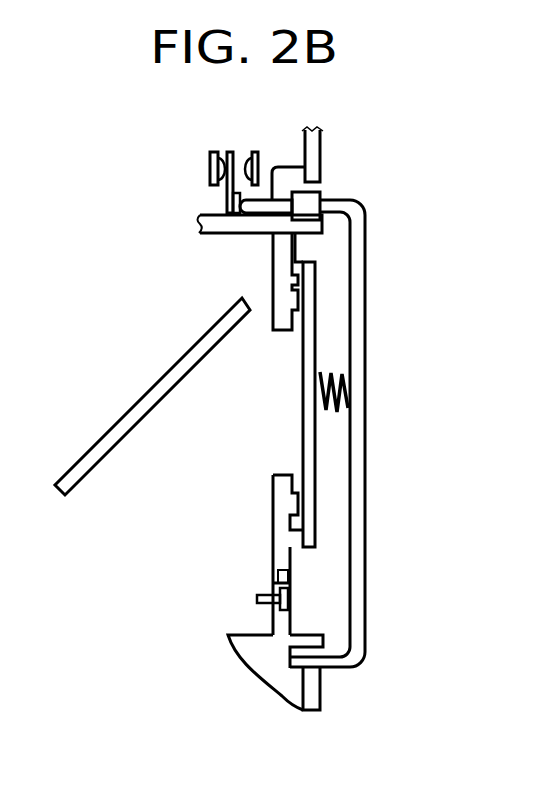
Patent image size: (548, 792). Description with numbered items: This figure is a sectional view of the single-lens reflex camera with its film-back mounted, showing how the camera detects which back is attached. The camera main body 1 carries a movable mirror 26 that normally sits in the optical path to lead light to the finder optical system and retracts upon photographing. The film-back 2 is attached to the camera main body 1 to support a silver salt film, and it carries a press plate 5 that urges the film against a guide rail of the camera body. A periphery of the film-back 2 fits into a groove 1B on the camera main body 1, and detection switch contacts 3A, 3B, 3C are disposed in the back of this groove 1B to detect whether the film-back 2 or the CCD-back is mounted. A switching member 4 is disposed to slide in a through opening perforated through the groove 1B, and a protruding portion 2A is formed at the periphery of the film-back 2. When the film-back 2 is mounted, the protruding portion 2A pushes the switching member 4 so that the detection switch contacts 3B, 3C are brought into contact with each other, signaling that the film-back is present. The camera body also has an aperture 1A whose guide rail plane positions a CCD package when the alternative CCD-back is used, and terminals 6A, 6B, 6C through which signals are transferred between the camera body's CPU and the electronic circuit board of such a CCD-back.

The camera main body 1 is at (323, 137).
The aperture 1A is at (275, 493).
The groove 1B is at (340, 213).
The film-back 2 is at (366, 296).
The protruding portion 2A is at (308, 197).
The detection switch contact 3A is at (255, 150).
The detection switch contact 3B is at (230, 150).
The detection switch contact 3C is at (210, 165).
The switching member 4 is at (253, 215).
The press plate 5 is at (303, 381).
The terminal 6A is at (257, 599).
The terminal 6B is at (284, 599).
The terminal 6C is at (281, 576).
The movable mirror 26 is at (108, 443).